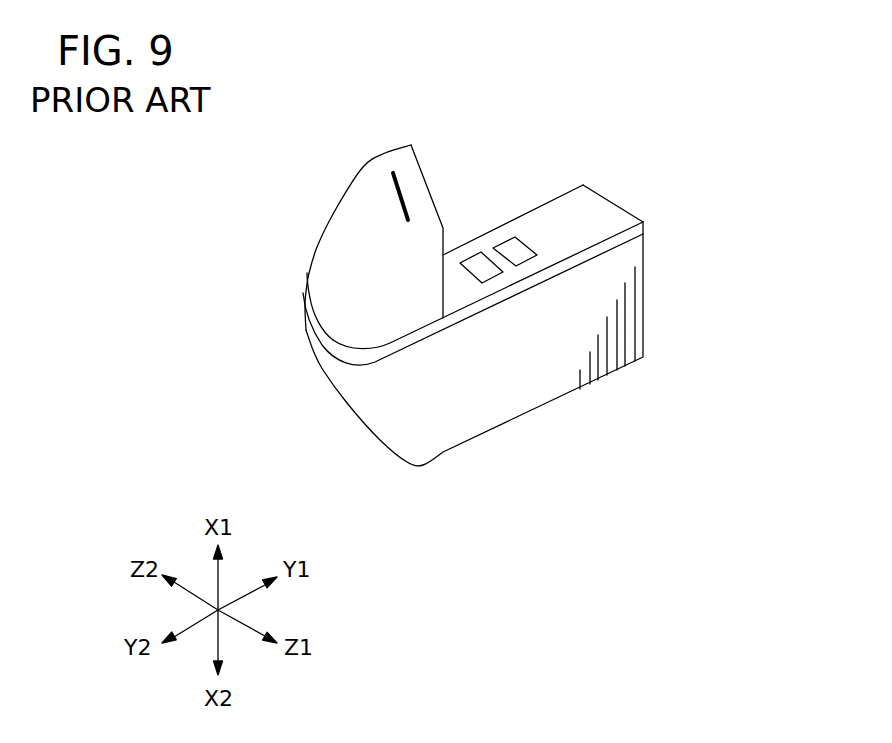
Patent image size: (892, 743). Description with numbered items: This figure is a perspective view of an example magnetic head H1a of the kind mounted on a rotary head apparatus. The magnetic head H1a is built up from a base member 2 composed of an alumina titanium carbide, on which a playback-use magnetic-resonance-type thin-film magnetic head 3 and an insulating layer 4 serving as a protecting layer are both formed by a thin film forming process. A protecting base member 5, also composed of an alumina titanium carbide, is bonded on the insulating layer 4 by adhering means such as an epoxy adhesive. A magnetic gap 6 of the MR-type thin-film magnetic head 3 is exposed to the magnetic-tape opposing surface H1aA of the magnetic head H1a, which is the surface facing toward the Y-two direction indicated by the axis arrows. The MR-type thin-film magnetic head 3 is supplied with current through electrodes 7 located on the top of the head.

The base member 2 is at (520, 385).
The MR-type thin-film magnetic head 3 is at (334, 337).
The insulating layer 4 is at (633, 230).
The protecting base member 5 is at (349, 243).
The magnetic gap 6 is at (318, 320).
The electrodes 7 is at (507, 247).
The magnetic head H1a is at (620, 188).
The magnetic-tape opposing surface H1aA is at (316, 317).